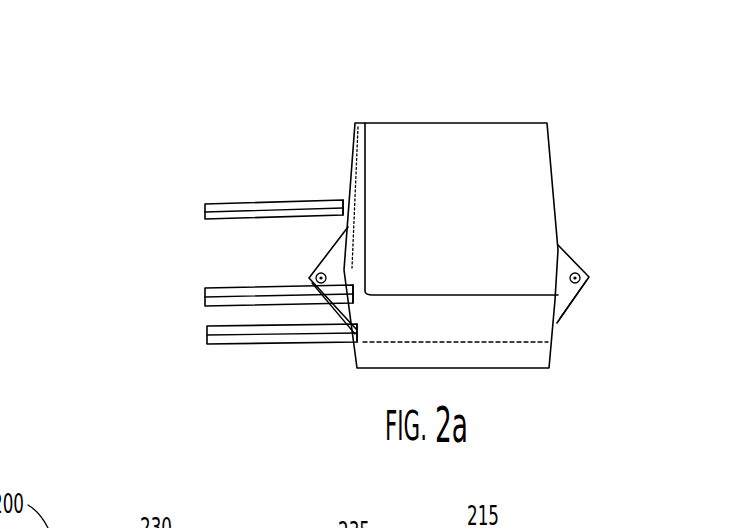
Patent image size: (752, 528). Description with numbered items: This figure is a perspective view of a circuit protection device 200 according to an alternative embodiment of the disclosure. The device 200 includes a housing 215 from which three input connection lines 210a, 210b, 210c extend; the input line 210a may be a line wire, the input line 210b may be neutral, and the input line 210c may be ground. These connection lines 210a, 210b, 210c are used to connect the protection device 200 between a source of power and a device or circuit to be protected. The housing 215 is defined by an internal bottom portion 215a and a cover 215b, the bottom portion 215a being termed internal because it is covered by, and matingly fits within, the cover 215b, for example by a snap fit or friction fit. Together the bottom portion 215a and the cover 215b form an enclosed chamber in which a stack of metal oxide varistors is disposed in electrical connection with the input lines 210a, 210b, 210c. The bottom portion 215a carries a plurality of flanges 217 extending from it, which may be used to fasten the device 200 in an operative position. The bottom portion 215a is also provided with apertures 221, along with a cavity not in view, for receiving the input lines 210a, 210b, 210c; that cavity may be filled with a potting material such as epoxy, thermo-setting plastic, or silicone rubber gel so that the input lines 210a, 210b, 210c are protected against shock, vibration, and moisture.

The circuit protection device 200 is at (357, 238).
The housing 215 is at (408, 155).
The internal bottom portion 215a is at (527, 370).
The cover 215b is at (475, 180).
The flanges 217 is at (310, 270).
The input connection line 210a is at (213, 208).
The input connection line 210b is at (210, 292).
The input connection line 210c is at (212, 337).
The apertures 221 is at (337, 203).